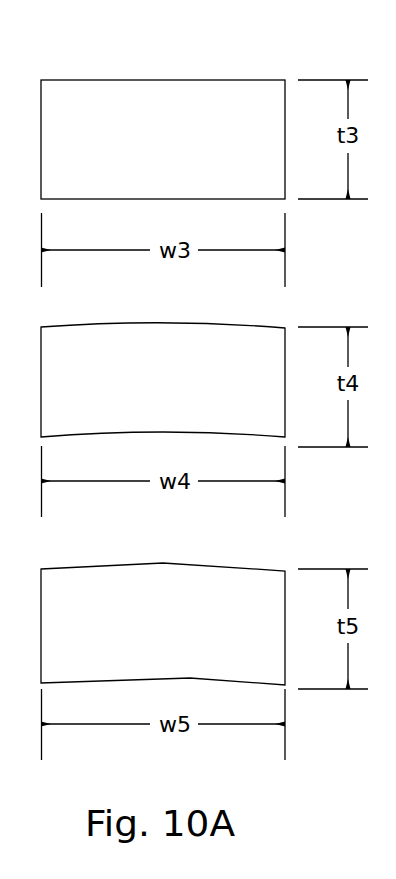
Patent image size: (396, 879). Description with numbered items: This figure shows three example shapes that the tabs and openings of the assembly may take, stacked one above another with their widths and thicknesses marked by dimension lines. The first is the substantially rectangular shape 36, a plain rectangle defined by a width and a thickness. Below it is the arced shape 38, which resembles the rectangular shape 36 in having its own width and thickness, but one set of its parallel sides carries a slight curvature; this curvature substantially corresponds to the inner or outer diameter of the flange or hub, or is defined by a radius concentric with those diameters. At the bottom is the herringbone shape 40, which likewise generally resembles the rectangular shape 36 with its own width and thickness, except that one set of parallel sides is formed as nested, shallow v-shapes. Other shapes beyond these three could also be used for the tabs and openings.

The substantially rectangular shape 36 is at (252, 97).
The arced shape 38 is at (86, 345).
The herringbone shape 40 is at (103, 588).